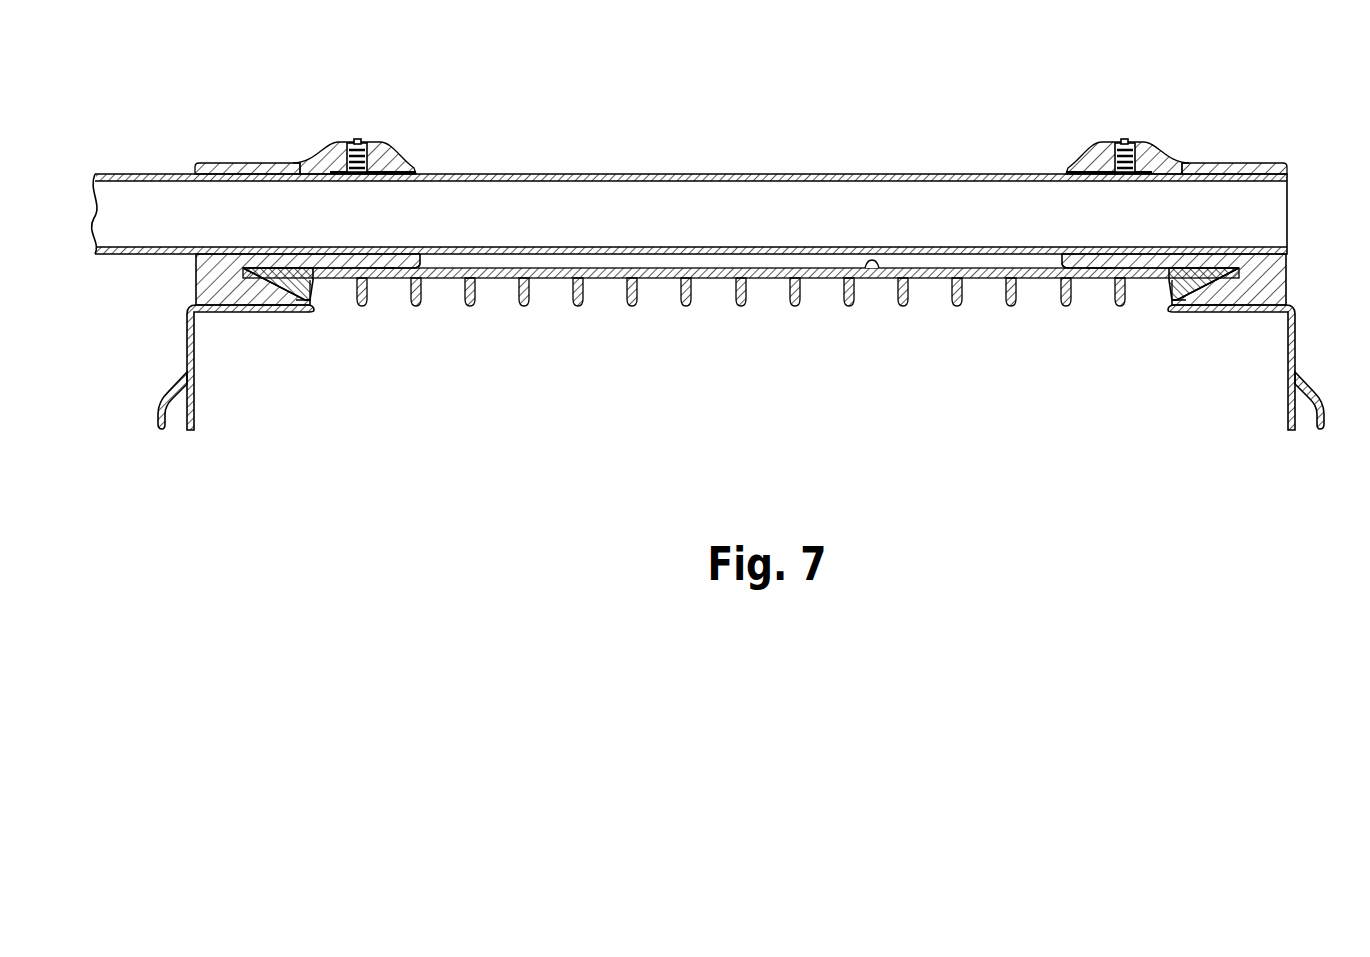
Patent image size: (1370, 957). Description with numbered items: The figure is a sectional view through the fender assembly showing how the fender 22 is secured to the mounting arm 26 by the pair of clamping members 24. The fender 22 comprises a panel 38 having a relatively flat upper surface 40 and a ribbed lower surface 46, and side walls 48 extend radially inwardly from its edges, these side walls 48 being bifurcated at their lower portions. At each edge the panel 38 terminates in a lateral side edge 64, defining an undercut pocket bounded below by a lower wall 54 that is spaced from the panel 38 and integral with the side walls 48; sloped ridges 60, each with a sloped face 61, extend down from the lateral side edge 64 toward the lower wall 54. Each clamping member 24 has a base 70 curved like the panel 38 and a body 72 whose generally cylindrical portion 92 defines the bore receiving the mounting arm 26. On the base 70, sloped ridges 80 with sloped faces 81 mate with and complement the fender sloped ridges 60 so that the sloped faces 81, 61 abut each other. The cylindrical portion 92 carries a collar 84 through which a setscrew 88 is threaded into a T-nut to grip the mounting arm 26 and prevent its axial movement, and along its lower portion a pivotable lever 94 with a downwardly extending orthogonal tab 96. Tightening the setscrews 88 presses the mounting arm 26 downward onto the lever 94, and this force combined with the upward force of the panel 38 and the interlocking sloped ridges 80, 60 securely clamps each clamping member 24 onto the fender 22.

The fender 22 is at (706, 418).
The clamping member 24 is at (729, 106).
The mounting arm 26 is at (672, 205).
The panel 38 is at (741, 258).
The upper surface 40 is at (870, 270).
The lower surface 46 is at (882, 273).
The side wall 48 is at (157, 418).
The lower wall 54 is at (716, 418).
The sloped ridge 60 is at (312, 292).
The sloped face 61 is at (305, 301).
The lateral side edge 64 is at (245, 271).
The base 70 is at (713, 313).
The body 72 is at (219, 161).
The sloped ridge 80 is at (259, 307).
The sloped face 81 is at (280, 300).
The collar 84 is at (387, 151).
The setscrew 88 is at (358, 140).
The cylindrical portion 92 is at (410, 170).
The lever 94 is at (380, 270).
The tab 96 is at (410, 270).